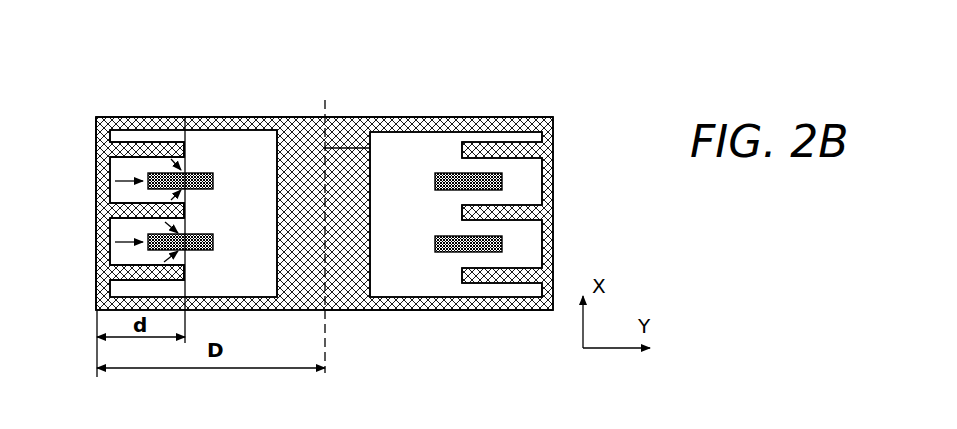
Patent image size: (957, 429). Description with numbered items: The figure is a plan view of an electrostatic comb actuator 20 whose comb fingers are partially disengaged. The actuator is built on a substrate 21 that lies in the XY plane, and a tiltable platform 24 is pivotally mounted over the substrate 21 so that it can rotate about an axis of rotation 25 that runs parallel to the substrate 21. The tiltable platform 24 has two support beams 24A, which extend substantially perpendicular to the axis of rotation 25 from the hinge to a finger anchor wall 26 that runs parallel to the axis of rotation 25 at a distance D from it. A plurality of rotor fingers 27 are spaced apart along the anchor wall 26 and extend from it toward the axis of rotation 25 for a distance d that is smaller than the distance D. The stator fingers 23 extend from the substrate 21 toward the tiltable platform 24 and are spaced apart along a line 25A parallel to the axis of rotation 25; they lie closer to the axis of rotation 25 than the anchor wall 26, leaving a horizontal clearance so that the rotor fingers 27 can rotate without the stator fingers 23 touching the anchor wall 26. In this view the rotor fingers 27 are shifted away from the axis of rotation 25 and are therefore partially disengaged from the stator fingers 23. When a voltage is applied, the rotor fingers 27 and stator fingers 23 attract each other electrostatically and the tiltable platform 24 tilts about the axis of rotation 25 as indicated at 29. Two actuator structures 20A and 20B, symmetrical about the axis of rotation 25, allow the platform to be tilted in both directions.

The electrostatic comb actuator 20 is at (620, 237).
The first actuator structure 20A is at (229, 44).
The second actuator structure 20B is at (428, 41).
The substrate 21 is at (453, 361).
The stator fingers 23 is at (213, 182).
The tiltable platform 24 is at (313, 301).
The support beams 24A is at (168, 122).
The axis of rotation 25 is at (371, 148).
The line 25A is at (172, 160).
The finger anchor wall 26 is at (93, 190).
The rotor fingers 27 is at (138, 268).
The tilt direction 29 is at (310, 108).